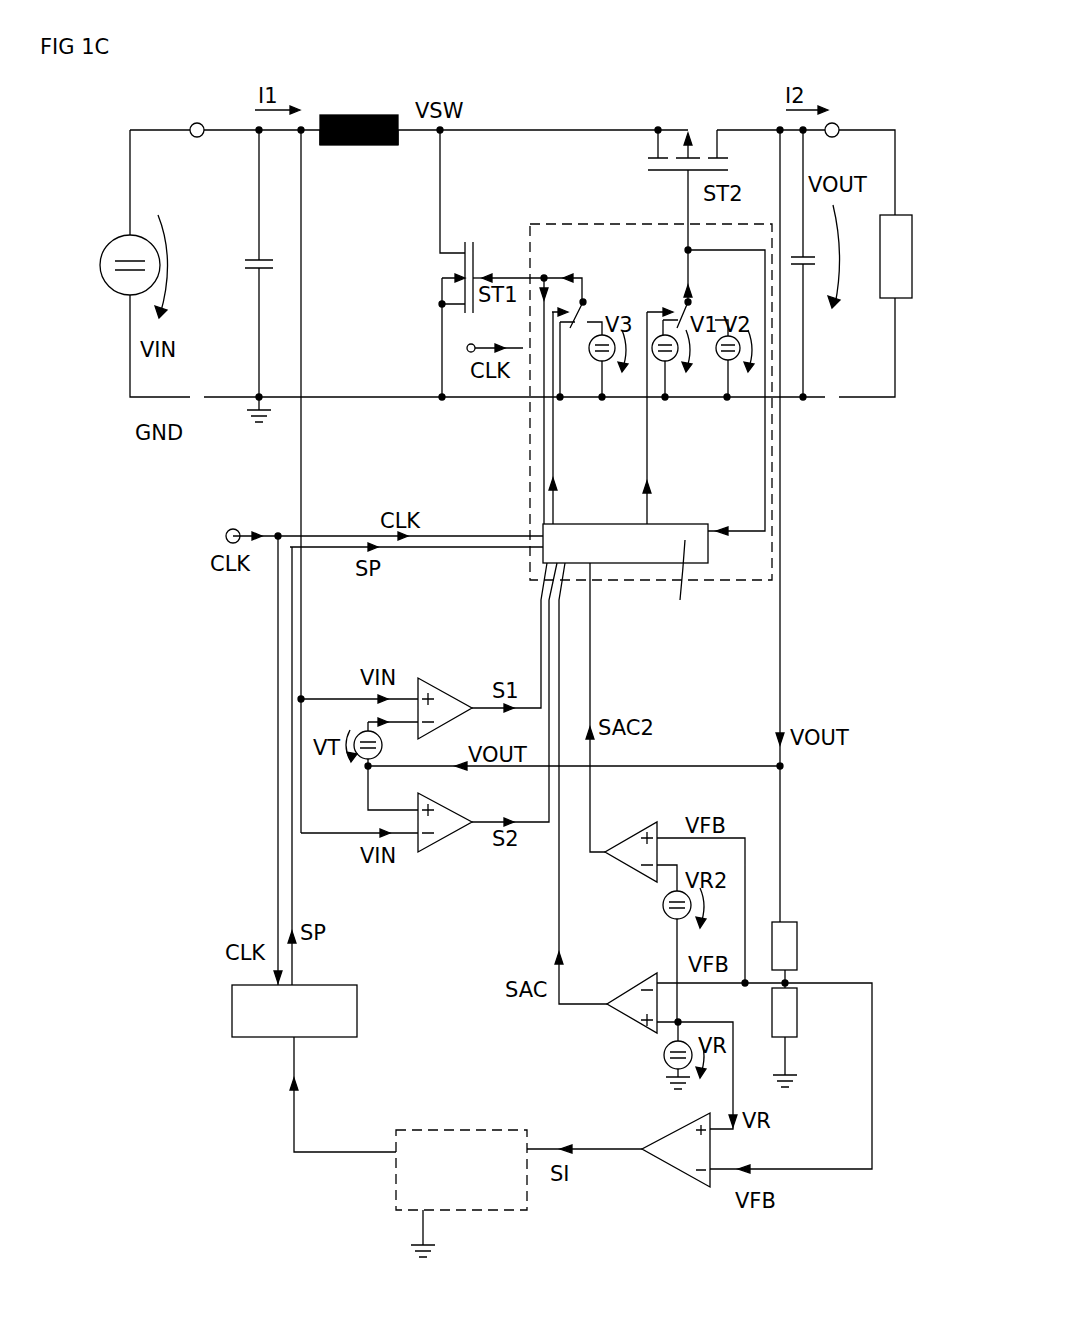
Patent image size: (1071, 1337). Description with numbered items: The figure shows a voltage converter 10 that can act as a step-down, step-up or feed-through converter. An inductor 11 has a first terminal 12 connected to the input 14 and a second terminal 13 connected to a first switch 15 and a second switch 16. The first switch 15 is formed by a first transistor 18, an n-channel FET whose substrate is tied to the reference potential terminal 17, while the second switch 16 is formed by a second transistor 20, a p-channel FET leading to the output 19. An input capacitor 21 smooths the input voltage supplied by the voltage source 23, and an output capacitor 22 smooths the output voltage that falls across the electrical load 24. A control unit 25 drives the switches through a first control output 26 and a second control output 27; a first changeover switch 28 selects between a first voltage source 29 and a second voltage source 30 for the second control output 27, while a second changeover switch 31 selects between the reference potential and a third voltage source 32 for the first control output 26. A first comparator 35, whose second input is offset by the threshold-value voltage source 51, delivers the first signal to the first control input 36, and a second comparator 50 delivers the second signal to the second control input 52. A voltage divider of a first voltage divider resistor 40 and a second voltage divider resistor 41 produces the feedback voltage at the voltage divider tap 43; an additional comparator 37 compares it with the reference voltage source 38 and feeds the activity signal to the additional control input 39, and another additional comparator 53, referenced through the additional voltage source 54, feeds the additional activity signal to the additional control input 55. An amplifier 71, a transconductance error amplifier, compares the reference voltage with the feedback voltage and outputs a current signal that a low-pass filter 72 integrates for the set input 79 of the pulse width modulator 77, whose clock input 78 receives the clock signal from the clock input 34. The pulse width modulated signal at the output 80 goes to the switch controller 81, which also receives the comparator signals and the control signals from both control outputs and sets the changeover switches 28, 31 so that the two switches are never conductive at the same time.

The voltage converter 10 is at (578, 97).
The inductor 11 is at (378, 112).
The first terminal 12 is at (319, 146).
The second terminal 13 is at (399, 146).
The input 14 is at (200, 124).
The first switch 15 is at (400, 284).
The second switch 16 is at (685, 79).
The reference potential terminal 17 is at (259, 413).
The first transistor 18 is at (448, 272).
The output 19 is at (835, 123).
The second transistor 20 is at (676, 127).
The input capacitor 21 is at (260, 270).
The output capacitor 22 is at (804, 256).
The voltage source 23 is at (106, 246).
The electrical load 24 is at (895, 300).
The control unit 25 is at (555, 222).
The first control output 26 is at (522, 274).
The second control output 27 is at (687, 205).
The first changeover switch 28 is at (683, 313).
The first voltage source 29 is at (664, 390).
The second voltage source 30 is at (726, 378).
The second changeover switch 31 is at (585, 302).
The third voltage source 32 is at (612, 390).
The clock input 34 is at (517, 348).
The first comparator 35 is at (453, 683).
The first control input 36 is at (540, 582).
The additional comparator 37 is at (628, 985).
The reference voltage source 38 is at (664, 1055).
The additional control input 39 is at (568, 565).
The first voltage divider resistor 40 is at (800, 940).
The second voltage divider resistor 41 is at (800, 1008).
The voltage divider tap 43 is at (785, 983).
The second comparator 50 is at (480, 803).
The threshold-value voltage source 51 is at (382, 747).
The second control input 52 is at (654, 470).
The additional comparator 53 is at (622, 838).
The additional voltage source 54 is at (664, 910).
The additional control input 55 is at (590, 586).
The amplifier 71 is at (663, 1140).
The filter 72 is at (482, 1130).
The pulse width modulator 77 is at (357, 1013).
The clock input 78 is at (278, 983).
The set input 79 is at (297, 1038).
The output 80 is at (297, 985).
The switch controller 81 is at (687, 524).